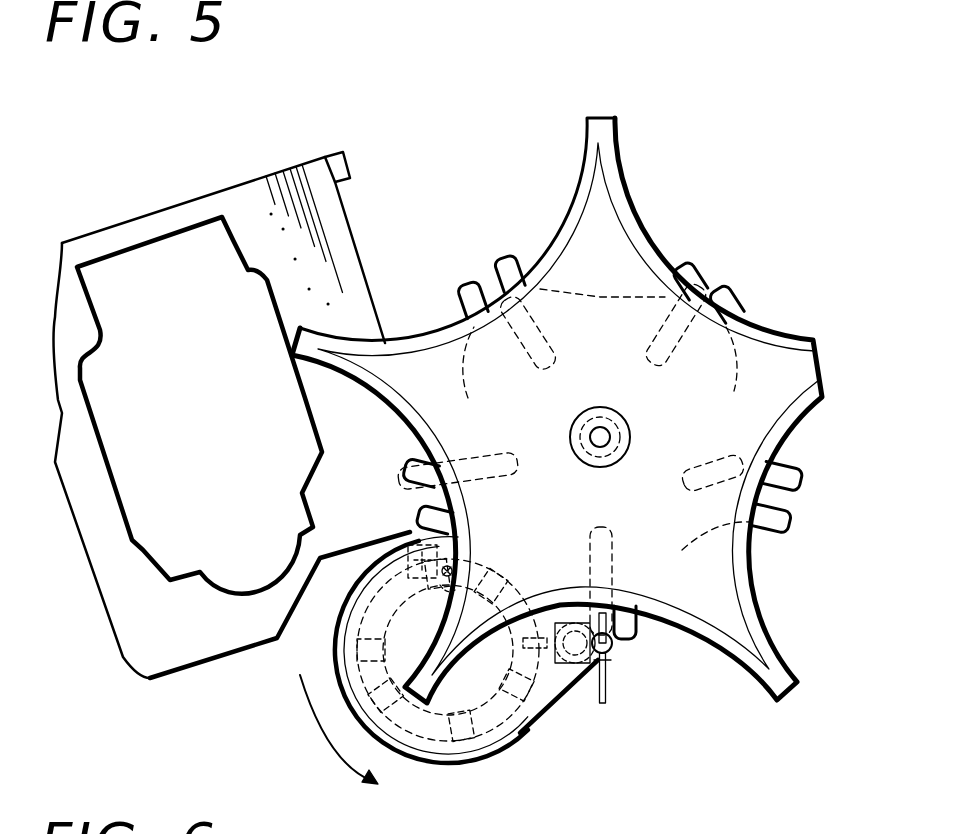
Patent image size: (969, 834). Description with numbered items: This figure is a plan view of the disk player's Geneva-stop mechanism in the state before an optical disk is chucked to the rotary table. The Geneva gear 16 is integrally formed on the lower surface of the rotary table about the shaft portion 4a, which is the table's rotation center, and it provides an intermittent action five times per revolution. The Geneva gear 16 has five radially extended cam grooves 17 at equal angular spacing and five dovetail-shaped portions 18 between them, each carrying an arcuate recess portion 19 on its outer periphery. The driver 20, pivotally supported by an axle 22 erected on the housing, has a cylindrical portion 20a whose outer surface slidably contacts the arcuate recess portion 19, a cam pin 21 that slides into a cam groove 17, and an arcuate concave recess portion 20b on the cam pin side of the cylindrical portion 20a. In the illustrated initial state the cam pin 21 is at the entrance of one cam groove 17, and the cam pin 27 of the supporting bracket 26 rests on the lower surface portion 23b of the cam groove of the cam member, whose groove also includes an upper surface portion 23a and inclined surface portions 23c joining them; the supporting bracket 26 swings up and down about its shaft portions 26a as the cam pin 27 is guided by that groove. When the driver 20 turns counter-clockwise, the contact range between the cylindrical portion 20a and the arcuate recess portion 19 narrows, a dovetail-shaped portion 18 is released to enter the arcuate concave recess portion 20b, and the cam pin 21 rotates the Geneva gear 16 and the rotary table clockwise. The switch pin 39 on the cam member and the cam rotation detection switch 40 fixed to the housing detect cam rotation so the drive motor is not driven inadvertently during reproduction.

The shaft portion 4a is at (600, 437).
The Geneva gear 16 is at (721, 246).
The cam grooves 17 is at (722, 285).
The dovetail-shaped portions 18 is at (717, 397).
The arcuate recess portion 19 is at (600, 297).
The driver 20 is at (410, 757).
The cylindrical portion 20a is at (440, 763).
The arcuate concave recess portion 20b is at (492, 752).
The cam pin 21 is at (613, 650).
The axle 22 is at (372, 705).
The upper surface portion 23a is at (410, 620).
The lower surface portion 23b is at (560, 720).
The inclined surface portions 23c is at (410, 597).
The supporting bracket 26 is at (255, 190).
The shaft portions 26a is at (343, 163).
The cam pin 27 is at (442, 572).
The switch pin 39 is at (457, 570).
The cam rotation detection switch 40 is at (580, 665).